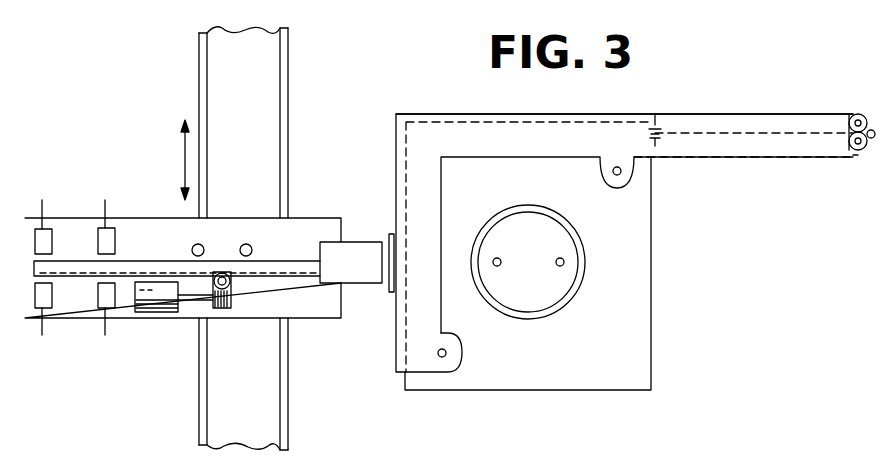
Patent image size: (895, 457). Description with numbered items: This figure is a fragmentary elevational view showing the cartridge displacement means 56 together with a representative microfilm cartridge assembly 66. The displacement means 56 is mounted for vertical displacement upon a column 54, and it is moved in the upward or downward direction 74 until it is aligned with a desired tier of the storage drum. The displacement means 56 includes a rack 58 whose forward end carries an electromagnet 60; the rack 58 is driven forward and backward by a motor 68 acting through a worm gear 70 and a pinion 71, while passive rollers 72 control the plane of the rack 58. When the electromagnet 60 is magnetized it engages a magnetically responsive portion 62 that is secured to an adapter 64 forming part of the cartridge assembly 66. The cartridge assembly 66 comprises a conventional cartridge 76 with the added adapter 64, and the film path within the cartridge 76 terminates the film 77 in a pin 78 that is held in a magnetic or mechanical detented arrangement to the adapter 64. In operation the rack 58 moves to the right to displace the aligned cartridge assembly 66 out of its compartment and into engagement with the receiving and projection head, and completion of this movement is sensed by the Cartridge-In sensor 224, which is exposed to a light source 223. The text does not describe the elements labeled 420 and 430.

The column 54 is at (252, 422).
The cartridge displacement means 56 is at (90, 366).
The rack 58 is at (307, 264).
The electromagnet 60 is at (372, 280).
The magnetically responsive portion 62 is at (389, 240).
The adapter 64 is at (498, 122).
The cartridge assembly 66 is at (660, 218).
The motor 68 is at (170, 310).
The worm gear 70 is at (228, 310).
The pinion 71 is at (229, 280).
The passive rollers 72 is at (192, 247).
The upward or downward direction 74 is at (182, 158).
The cartridge 76 is at (633, 318).
The film 77 is at (680, 133).
The pin 78 is at (872, 140).
The light source 223 is at (108, 244).
The Cartridge-In sensor 224 is at (110, 290).
The terminal 420 is at (46, 244).
The terminal 430 is at (47, 290).